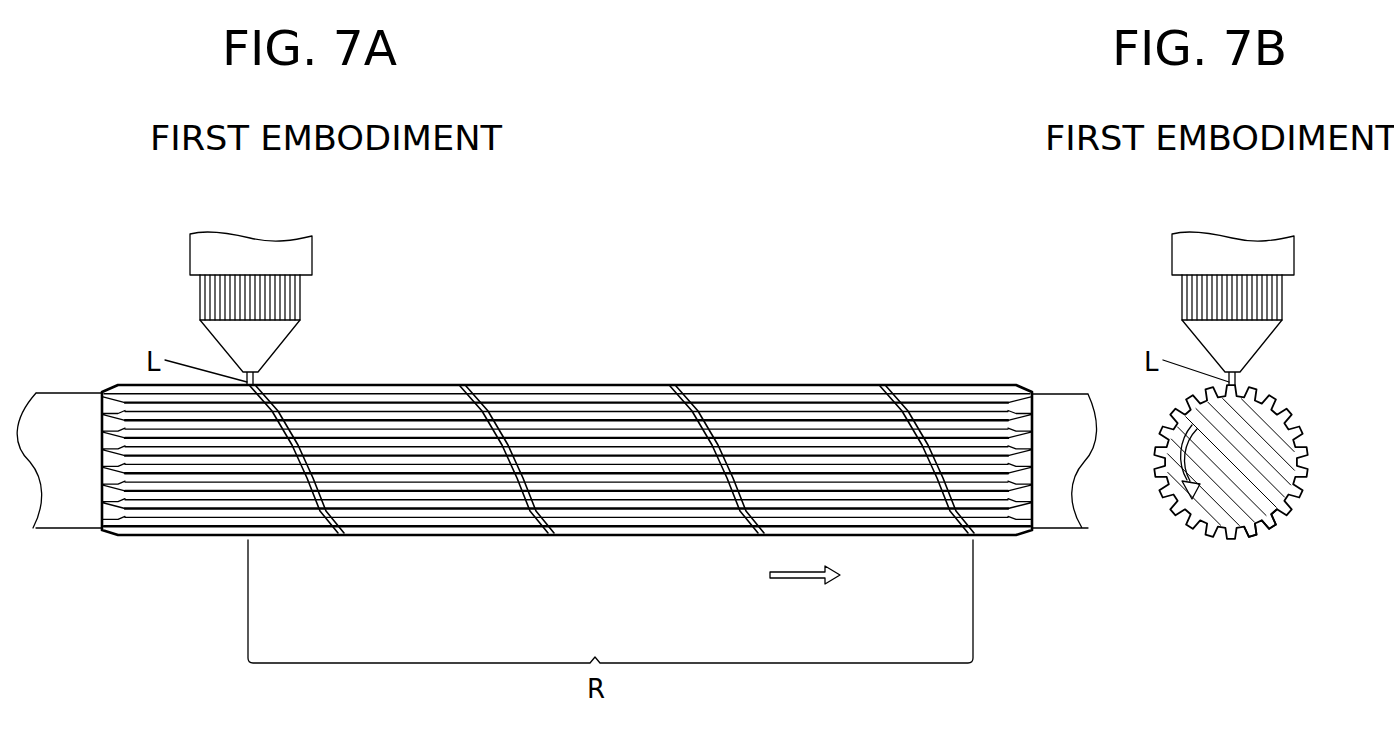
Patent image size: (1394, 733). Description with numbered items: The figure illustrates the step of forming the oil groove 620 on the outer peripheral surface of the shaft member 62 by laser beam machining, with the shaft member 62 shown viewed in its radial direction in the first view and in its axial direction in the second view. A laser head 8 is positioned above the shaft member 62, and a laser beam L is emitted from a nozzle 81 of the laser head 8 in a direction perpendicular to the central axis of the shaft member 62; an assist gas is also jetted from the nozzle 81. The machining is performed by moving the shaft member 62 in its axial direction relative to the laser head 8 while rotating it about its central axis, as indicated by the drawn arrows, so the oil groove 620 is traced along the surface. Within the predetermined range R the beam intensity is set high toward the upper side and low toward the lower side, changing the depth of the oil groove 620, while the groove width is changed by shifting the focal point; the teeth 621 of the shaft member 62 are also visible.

In FIG. 7A, the laser head 8 is at (312, 257).
In FIG. 7B, the laser head 8 is at (1294, 257).
In FIG. 7A, the nozzle 81 is at (283, 342).
In FIG. 7B, the nozzle 81 is at (1265, 342).
In FIG. 7A, the shaft member 62 is at (508, 384).
In FIG. 7B, the shaft member 62 is at (1218, 507).
In FIG. 7A, the tooth of gear 621 is at (597, 420).
In FIG. 7B, the tooth of gear 621 is at (1283, 513).
In FIG. 7A, the oil groove 620 is at (698, 410).